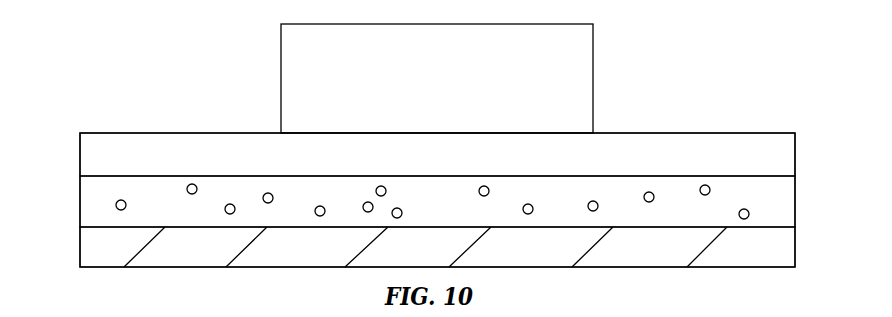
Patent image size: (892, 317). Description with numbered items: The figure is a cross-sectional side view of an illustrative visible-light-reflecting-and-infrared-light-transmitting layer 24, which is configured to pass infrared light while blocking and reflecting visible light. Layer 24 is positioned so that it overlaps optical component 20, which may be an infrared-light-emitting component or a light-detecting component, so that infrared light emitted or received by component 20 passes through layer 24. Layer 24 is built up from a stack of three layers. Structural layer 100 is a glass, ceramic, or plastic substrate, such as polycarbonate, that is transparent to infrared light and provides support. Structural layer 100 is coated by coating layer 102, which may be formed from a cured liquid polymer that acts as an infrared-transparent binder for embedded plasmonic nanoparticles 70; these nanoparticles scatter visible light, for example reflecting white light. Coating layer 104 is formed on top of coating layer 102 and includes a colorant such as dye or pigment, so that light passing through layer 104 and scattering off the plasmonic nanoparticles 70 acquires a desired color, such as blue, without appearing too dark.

The optical component 20 is at (577, 72).
The visible-light-reflecting-and-infrared-light-transmitting layer 24 is at (813, 271).
The plasmonic nanoparticles 70 is at (265, 195).
The structural layer 100 is at (90, 156).
The coating layer 102 is at (90, 198).
The coating layer 104 is at (90, 248).